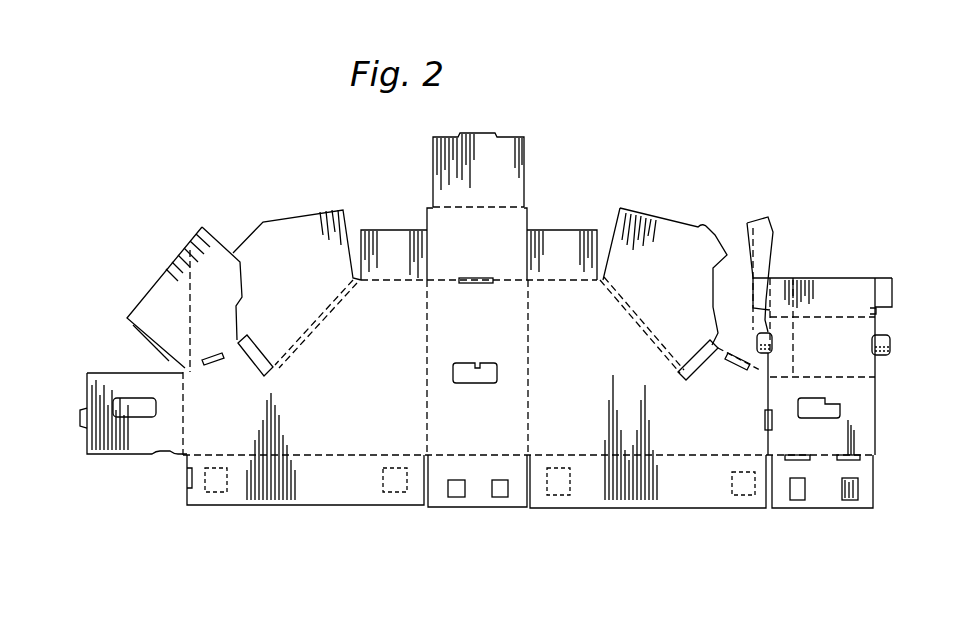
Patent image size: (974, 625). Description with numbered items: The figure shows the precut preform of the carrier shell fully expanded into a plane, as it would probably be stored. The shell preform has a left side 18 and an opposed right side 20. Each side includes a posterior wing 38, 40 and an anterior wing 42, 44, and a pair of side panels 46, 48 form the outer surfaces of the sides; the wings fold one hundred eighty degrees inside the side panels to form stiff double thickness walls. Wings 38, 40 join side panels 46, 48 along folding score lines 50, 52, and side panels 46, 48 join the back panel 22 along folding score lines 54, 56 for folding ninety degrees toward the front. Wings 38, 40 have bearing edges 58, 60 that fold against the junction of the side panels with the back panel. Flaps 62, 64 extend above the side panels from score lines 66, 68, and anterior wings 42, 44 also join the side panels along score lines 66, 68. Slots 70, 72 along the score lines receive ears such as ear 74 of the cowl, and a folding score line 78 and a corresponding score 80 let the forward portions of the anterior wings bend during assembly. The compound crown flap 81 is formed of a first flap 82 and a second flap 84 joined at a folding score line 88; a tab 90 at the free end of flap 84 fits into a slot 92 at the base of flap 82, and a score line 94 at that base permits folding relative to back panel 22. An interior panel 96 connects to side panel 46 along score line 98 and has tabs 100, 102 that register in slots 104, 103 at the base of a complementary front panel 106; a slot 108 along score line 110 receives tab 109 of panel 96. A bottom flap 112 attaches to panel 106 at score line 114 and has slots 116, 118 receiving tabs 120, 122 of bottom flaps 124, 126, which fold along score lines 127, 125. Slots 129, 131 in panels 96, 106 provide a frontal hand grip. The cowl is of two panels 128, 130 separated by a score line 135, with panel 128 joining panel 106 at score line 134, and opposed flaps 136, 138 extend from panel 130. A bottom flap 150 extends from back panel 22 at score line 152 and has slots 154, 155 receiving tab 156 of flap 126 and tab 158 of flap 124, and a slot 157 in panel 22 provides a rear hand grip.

The left side 18 is at (297, 212).
The right side 20 is at (674, 209).
The back panel 22 is at (484, 337).
The posterior wing 38 is at (339, 214).
The posterior wing 40 is at (683, 233).
The anterior wing 42 is at (153, 297).
The anterior wing 44 is at (747, 224).
The side panel 46 is at (372, 378).
The side panel 48 is at (602, 380).
The folding score line 50 is at (300, 338).
The folding score line 52 is at (623, 313).
The folding score line 54 is at (427, 421).
The folding score line 56 is at (532, 417).
The bearing edge 58 is at (245, 238).
The bearing edge 60 is at (703, 236).
The flap 62 is at (393, 243).
The flap 64 is at (560, 237).
The score line 66 is at (232, 366).
The score line 68 is at (560, 283).
The slot 70 is at (210, 355).
The slot 72 is at (740, 372).
The ear 74 is at (891, 341).
The folding score line 78 is at (194, 298).
The score 80 is at (766, 288).
The compound crown flap 81 is at (503, 158).
The first flap 82 is at (522, 223).
The second flap 84 is at (520, 181).
The folding score line 88 is at (482, 206).
The tab 90 is at (487, 133).
The slot 92 is at (472, 278).
The score line 94 is at (513, 282).
The interior panel 96 is at (92, 393).
The score line 98 is at (187, 430).
The tab 100 is at (110, 456).
The tab 102 is at (158, 455).
The slot 103 is at (851, 457).
The slot 104 is at (790, 454).
The complementary front panel 106 is at (864, 438).
The slot 108 is at (772, 412).
The tab 109 is at (80, 424).
The score line 110 is at (765, 442).
The bottom flap 112 is at (875, 470).
The score line 114 is at (877, 457).
The slot 116 is at (800, 493).
The slot 118 is at (850, 493).
The tab 120 is at (738, 496).
The tab 122 is at (220, 494).
The bottom flap 124 is at (613, 509).
The score line 125 is at (290, 453).
The bottom flap 126 is at (315, 498).
The score line 127 is at (577, 455).
The panel 128 is at (867, 366).
The slot 129 is at (138, 397).
The panel 130 is at (877, 312).
The slot 131 is at (840, 407).
The score line 134 is at (863, 378).
The score line 135 is at (875, 282).
The flap 136 is at (780, 277).
The flap 138 is at (893, 292).
The bottom flap 150 is at (490, 506).
The score line 152 is at (492, 453).
The slot 154 is at (455, 498).
The slot 155 is at (505, 496).
The tab 156 is at (393, 494).
The slot 157 is at (483, 366).
The tab 158 is at (570, 486).